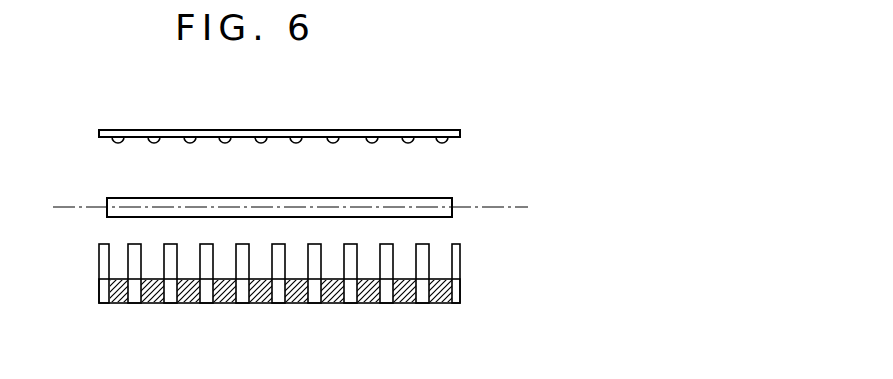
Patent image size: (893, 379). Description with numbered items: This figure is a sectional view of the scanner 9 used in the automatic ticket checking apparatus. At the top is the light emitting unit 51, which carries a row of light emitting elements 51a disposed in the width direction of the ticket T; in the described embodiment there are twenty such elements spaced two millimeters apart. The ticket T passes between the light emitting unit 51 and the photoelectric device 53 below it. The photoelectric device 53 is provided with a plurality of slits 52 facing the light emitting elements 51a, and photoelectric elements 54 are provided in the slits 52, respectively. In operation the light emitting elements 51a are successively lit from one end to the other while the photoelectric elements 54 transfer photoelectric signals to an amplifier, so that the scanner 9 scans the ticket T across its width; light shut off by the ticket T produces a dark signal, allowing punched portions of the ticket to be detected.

The scanner 9 is at (541, 165).
The light emitting unit 51 is at (373, 130).
The light emitting elements 51a is at (447, 141).
The ticket T is at (455, 211).
The slits 52 is at (445, 257).
The photoelectric device 53 is at (343, 305).
The photoelectric elements 54 is at (440, 297).